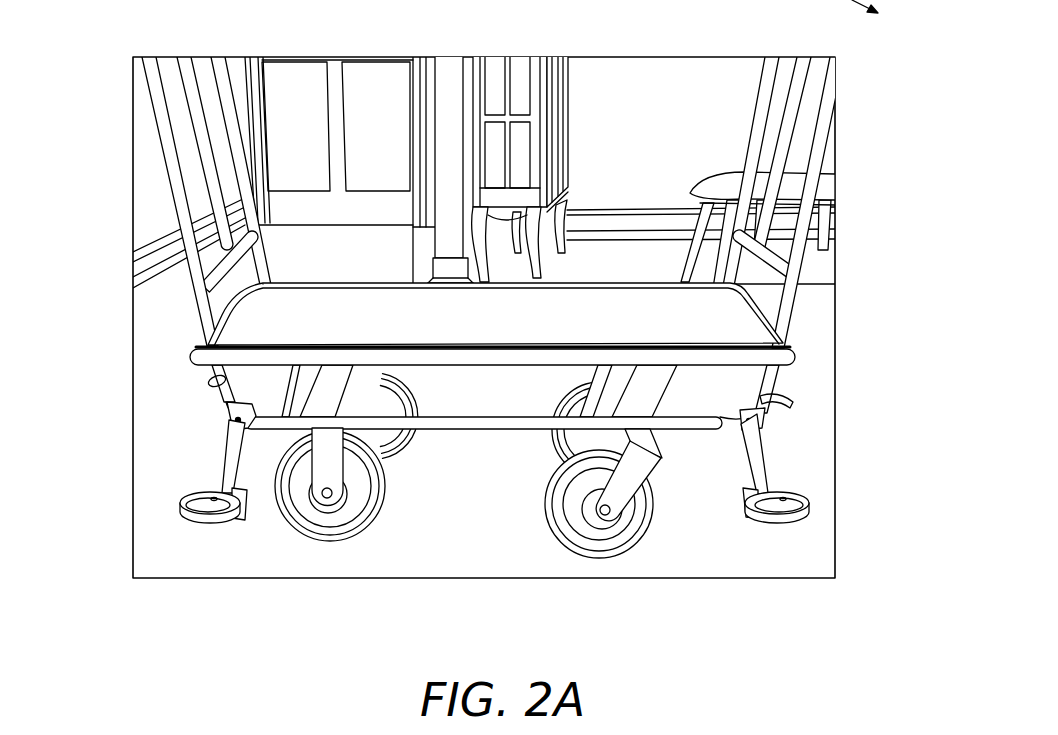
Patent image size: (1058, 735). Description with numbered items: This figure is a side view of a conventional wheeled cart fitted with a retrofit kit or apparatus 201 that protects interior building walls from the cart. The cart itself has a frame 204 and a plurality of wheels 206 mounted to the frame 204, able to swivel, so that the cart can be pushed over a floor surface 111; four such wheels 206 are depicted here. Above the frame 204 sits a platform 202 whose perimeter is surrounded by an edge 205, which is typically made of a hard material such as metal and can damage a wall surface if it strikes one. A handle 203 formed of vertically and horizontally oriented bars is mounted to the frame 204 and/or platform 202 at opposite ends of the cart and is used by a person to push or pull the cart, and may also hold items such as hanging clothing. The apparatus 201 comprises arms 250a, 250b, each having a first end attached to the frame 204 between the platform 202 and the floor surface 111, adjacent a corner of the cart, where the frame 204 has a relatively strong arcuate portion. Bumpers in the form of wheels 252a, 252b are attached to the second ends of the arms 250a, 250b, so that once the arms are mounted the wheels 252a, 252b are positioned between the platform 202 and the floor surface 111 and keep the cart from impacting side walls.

The apparatus 201 is at (502, 348).
The platform 202 is at (677, 313).
The handle 203 is at (780, 156).
The frame 204 is at (218, 379).
The edge 205 is at (742, 353).
The wheels 206 is at (593, 543).
The arm 250a is at (227, 460).
The arm 250b is at (762, 481).
The wheel 252a is at (183, 512).
The wheel 252b is at (787, 527).
The floor surface 111 is at (225, 558).